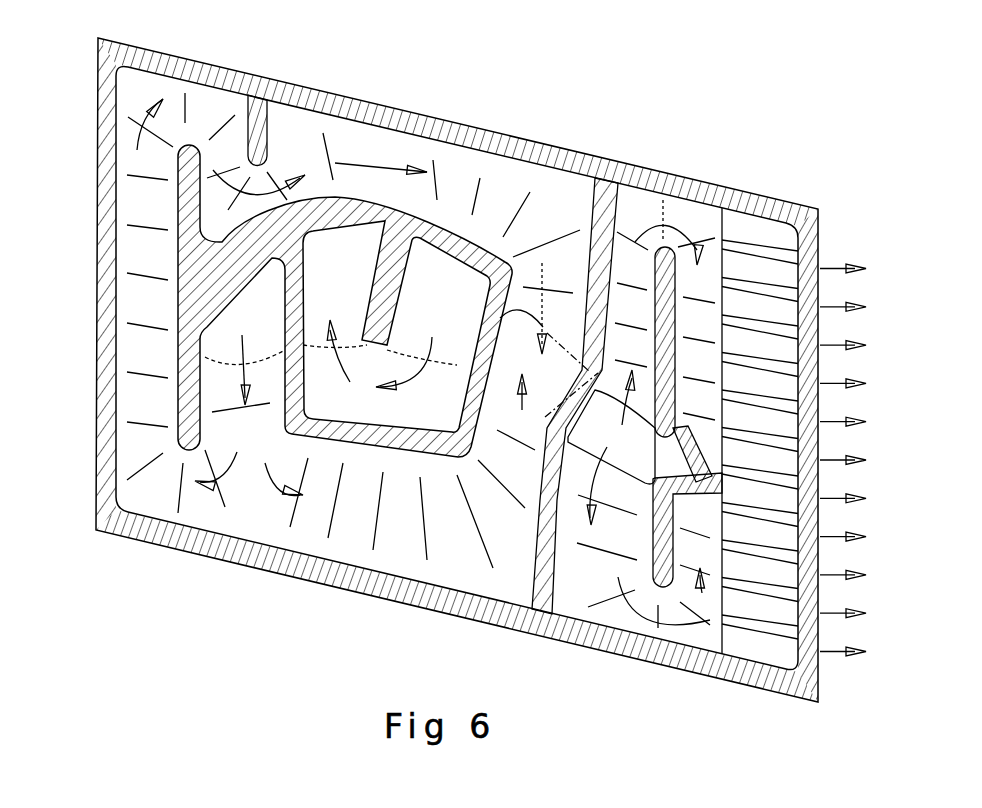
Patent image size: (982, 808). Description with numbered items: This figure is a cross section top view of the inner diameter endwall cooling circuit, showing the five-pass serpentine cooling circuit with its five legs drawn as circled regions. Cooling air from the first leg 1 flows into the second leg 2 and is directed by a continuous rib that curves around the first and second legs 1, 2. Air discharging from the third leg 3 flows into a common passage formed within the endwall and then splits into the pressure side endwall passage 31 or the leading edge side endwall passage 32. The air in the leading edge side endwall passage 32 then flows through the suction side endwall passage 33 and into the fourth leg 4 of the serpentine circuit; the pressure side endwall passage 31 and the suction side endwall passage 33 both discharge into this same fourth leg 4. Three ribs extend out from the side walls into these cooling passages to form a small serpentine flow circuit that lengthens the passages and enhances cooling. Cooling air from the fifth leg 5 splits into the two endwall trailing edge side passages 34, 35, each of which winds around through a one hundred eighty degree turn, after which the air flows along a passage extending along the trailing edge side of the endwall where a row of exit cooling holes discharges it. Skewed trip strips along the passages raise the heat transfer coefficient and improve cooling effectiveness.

The first leg 1 is at (417, 339).
The second leg 2 is at (335, 316).
The third leg 3 is at (245, 353).
The fourth leg 4 is at (545, 336).
The fifth leg 5 is at (600, 428).
The pressure side endwall passage 31 is at (310, 527).
The leading edge side endwall passage 32 is at (153, 238).
The suction side endwall passage 33 is at (352, 153).
The endwall trailing edge side passage 34 is at (610, 617).
The endwall trailing edge side passage 35 is at (695, 220).